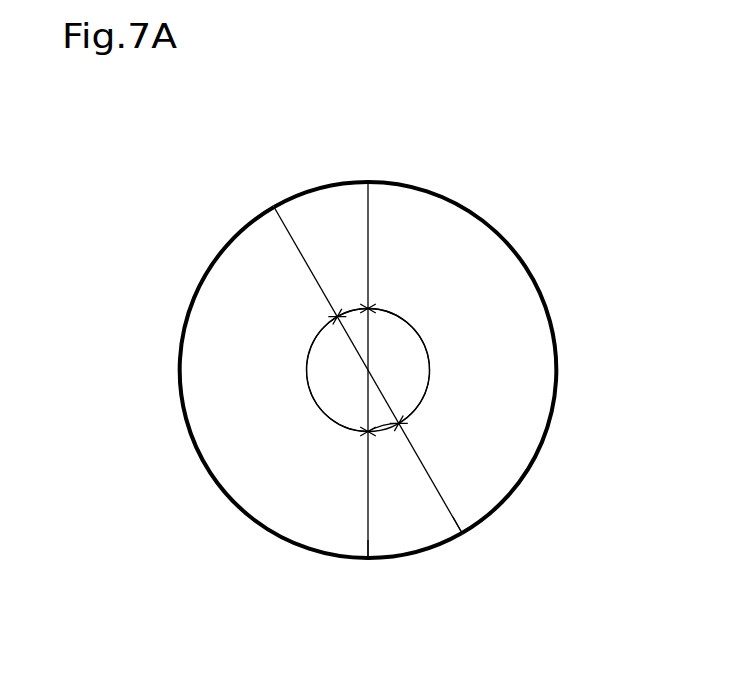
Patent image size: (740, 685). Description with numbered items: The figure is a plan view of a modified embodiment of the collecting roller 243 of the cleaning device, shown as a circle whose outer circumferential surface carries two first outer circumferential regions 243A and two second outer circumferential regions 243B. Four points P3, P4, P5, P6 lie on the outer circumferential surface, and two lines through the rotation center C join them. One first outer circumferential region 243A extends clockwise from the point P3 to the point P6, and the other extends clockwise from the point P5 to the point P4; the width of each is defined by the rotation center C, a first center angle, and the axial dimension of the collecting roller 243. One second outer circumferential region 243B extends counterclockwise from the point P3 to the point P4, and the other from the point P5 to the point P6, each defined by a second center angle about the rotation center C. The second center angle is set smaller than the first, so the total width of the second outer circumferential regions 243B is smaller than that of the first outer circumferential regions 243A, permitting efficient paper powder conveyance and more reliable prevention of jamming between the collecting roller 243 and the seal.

The collecting roller 243 is at (347, 363).
The first outer circumferential region 243A is at (178, 350).
The second outer circumferential region 243B is at (313, 187).
The point P3 is at (368, 570).
The point P4 is at (471, 549).
The point P5 is at (368, 172).
The point P6 is at (268, 194).
The rotation center C is at (369, 368).